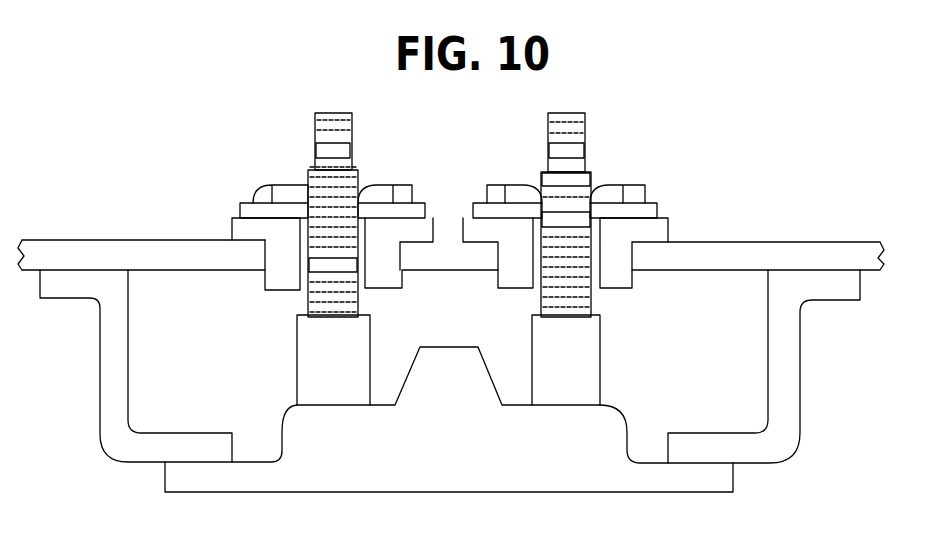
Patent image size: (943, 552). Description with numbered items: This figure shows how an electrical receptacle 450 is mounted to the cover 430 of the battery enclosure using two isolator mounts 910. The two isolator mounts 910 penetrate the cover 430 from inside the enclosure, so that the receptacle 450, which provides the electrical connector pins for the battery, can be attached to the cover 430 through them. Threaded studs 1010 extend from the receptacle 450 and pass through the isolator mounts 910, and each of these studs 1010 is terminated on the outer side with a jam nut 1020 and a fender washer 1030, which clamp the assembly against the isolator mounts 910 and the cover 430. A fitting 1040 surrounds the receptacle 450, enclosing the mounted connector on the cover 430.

The threaded stud 1010 is at (583, 172).
The jam nut 1020 is at (503, 186).
The fender washer 1030 is at (657, 205).
The enclosure cover 430 is at (807, 242).
The isolator mount 910 is at (618, 288).
The fitting 1040 is at (800, 360).
The electrical receptacle 450 is at (673, 492).